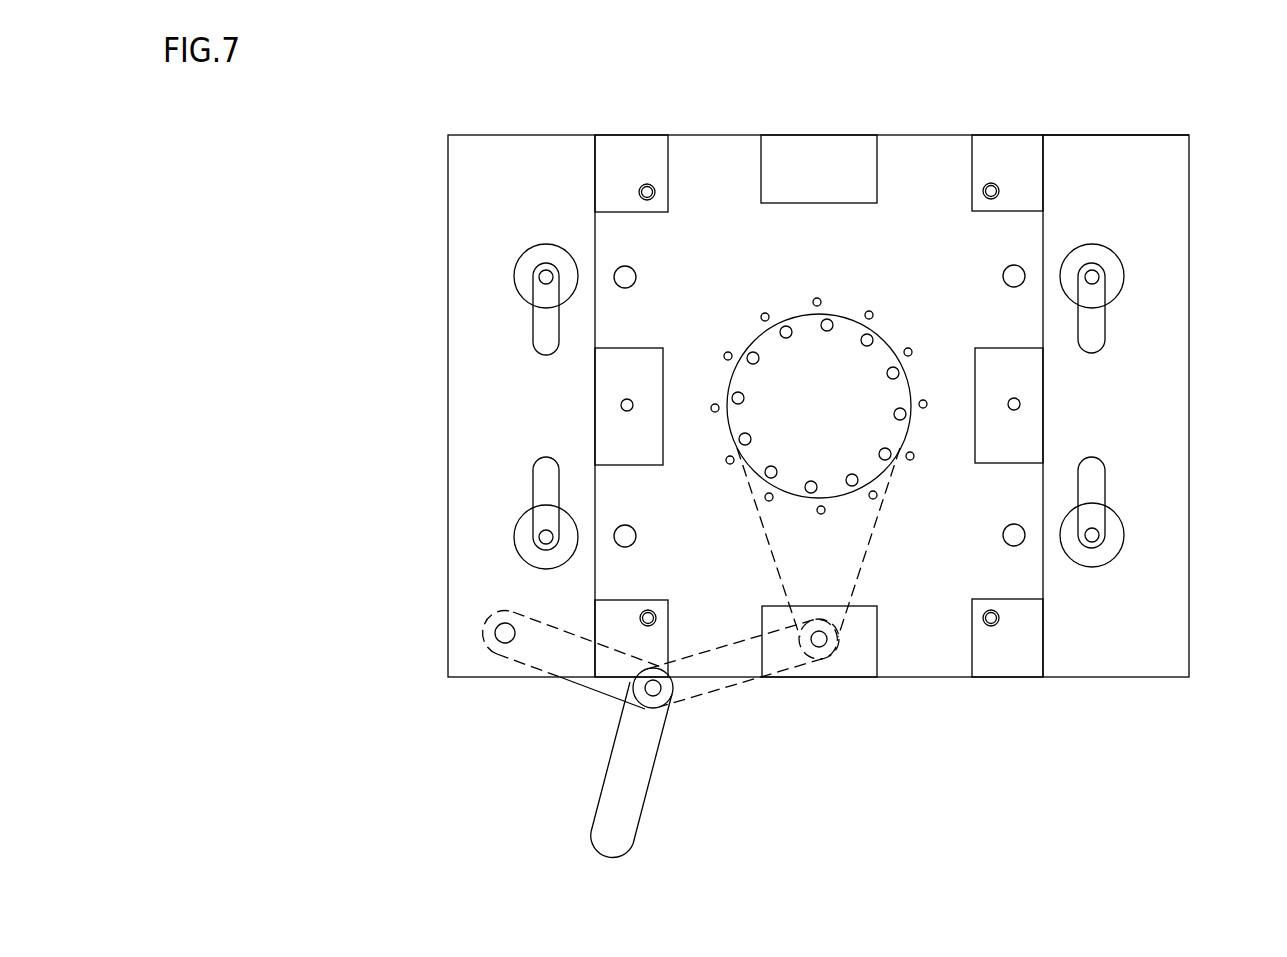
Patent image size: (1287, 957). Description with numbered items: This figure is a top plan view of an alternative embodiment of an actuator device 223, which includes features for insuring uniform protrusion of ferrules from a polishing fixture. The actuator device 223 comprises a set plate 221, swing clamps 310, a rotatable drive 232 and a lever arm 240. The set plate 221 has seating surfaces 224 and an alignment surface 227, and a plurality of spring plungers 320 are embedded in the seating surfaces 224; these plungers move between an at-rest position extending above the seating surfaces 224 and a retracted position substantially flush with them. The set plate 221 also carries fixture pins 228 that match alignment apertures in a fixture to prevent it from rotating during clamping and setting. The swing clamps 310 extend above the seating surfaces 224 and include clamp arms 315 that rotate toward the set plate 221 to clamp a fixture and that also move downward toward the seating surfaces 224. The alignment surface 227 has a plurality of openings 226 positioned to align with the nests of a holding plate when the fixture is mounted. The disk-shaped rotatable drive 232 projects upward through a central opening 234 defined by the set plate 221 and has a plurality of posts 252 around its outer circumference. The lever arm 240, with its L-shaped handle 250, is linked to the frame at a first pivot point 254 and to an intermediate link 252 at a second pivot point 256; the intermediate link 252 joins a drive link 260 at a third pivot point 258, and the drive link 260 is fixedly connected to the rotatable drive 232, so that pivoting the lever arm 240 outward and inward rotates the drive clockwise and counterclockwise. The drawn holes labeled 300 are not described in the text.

The set plate 221 is at (909, 163).
The actuator device 223 is at (1122, 135).
The seating surfaces 224 is at (633, 147).
The openings 226 is at (808, 295).
The alignment surface 227 is at (717, 432).
The fixture pins 228 is at (1024, 401).
The rotatable drive 232 is at (755, 373).
The central opening 234 is at (908, 427).
The lever arm 240 is at (645, 748).
The L-shaped handle 250 is at (620, 822).
The posts / intermediate link 252 is at (750, 343).
The first pivot point 254 is at (500, 633).
The second pivot point 256 is at (645, 693).
The third pivot point 258 is at (822, 642).
The drive link 260 is at (848, 548).
The mounting holes 300 is at (1022, 545).
The swing clamps 310 is at (1120, 246).
The clamp arms 315 is at (1105, 328).
The spring plungers 320 is at (638, 187).